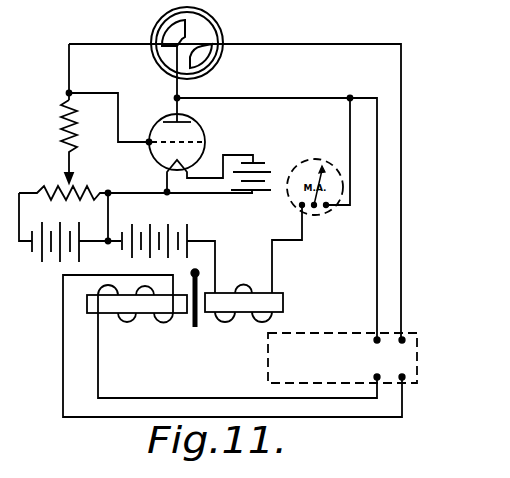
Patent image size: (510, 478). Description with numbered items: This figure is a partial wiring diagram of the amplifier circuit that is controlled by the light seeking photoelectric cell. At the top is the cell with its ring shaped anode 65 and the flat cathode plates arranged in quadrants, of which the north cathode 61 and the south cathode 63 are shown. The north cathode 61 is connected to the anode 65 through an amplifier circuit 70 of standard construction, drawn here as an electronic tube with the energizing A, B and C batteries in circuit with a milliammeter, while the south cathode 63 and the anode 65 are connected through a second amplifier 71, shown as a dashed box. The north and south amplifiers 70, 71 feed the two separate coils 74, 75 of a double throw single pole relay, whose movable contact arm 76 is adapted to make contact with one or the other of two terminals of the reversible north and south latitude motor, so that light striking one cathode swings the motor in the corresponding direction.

The north cathode 61 is at (157, 34).
The south cathode 63 is at (215, 51).
The ring shaped anode 65 is at (214, 38).
The amplifier circuit 70 is at (166, 166).
The amplifier 71 is at (329, 334).
The relay coil 74 is at (243, 293).
The relay coil 75 is at (124, 296).
The movable contact arm 76 is at (191, 325).